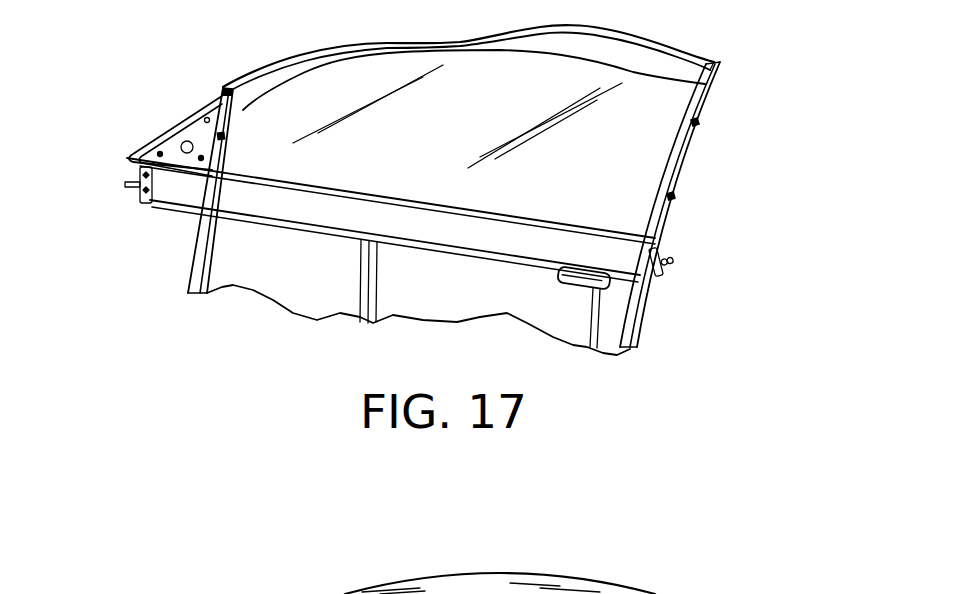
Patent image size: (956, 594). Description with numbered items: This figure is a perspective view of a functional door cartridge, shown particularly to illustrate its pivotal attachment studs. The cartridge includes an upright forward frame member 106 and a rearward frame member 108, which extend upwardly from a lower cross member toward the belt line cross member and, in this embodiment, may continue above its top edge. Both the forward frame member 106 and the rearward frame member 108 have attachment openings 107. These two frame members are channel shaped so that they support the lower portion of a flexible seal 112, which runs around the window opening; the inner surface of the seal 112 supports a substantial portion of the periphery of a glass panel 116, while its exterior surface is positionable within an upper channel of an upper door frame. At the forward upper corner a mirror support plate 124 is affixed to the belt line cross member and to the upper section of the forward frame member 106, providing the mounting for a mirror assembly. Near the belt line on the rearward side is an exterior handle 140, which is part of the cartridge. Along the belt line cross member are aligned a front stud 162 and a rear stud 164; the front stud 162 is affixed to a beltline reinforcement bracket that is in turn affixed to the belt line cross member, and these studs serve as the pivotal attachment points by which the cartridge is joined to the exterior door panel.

The forward frame member 106 is at (197, 262).
The attachment openings 107 is at (224, 138).
The rearward frame member 108 is at (676, 161).
The flexible seal 112 is at (660, 45).
The glass panel 116 is at (624, 112).
The mirror support plate 124 is at (168, 142).
The exterior handle 140 is at (612, 284).
The front stud 162 is at (130, 182).
The rear stud 164 is at (668, 262).